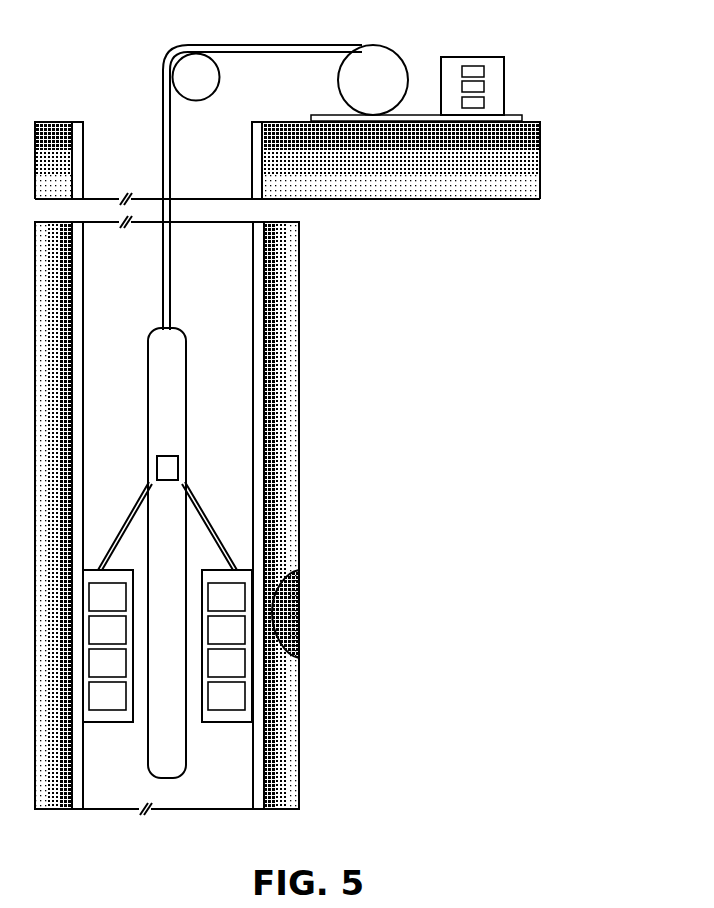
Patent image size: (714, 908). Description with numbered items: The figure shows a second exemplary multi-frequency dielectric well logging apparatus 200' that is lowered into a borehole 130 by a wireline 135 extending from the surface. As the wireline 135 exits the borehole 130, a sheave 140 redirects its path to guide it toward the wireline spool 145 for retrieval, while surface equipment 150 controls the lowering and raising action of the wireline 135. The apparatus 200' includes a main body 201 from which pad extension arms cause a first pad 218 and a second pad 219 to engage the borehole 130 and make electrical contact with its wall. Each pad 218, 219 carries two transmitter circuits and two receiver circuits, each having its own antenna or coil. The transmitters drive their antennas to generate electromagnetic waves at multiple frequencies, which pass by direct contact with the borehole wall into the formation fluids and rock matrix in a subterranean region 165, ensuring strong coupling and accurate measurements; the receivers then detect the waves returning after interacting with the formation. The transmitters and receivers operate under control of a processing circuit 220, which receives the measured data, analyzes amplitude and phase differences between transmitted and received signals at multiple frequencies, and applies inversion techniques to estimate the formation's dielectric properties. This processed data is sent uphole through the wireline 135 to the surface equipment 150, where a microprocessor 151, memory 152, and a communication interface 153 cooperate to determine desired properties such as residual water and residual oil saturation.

The borehole 130 is at (126, 118).
The wireline 135 is at (272, 45).
The sheave 140 is at (219, 74).
The wireline spool 145 is at (402, 43).
The surface equipment 150 is at (470, 57).
The microprocessor 151 is at (484, 71).
The memory 152 is at (484, 87).
The communication interface 153 is at (484, 103).
The subterranean region 165 is at (301, 578).
The multi-frequency dielectric well logging apparatus 200' is at (167, 534).
The main body 201 is at (187, 328).
The first pad 218 is at (117, 723).
The second pad 219 is at (222, 723).
The processing circuit 220 is at (176, 456).